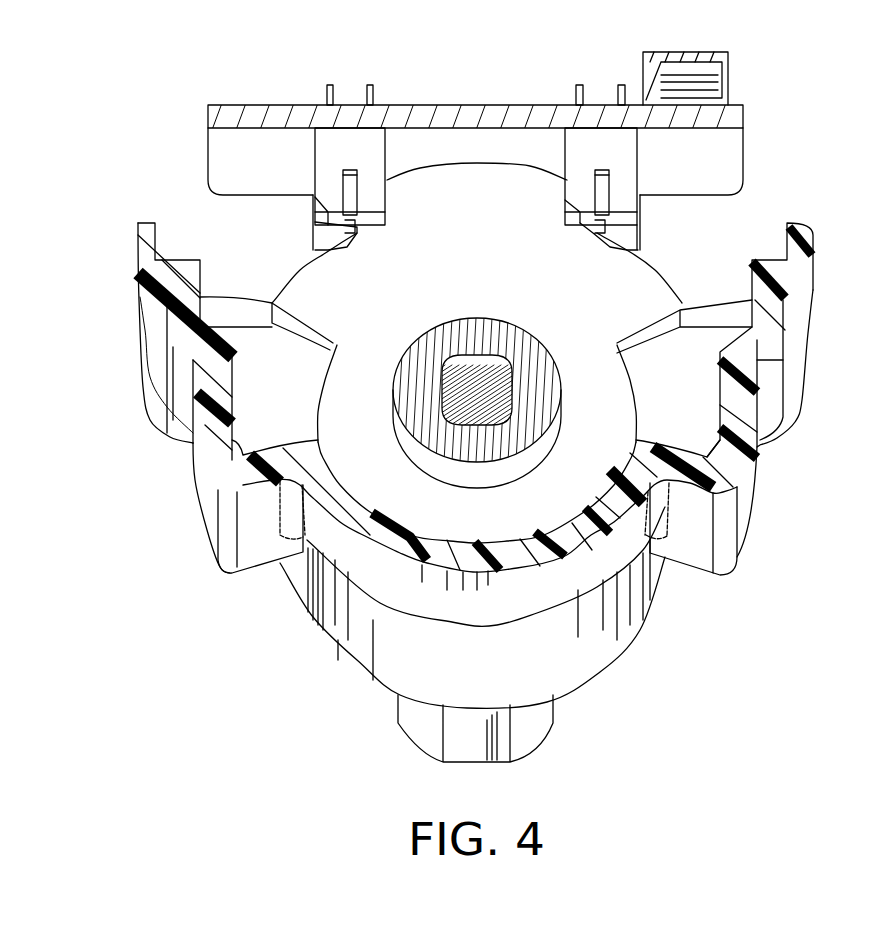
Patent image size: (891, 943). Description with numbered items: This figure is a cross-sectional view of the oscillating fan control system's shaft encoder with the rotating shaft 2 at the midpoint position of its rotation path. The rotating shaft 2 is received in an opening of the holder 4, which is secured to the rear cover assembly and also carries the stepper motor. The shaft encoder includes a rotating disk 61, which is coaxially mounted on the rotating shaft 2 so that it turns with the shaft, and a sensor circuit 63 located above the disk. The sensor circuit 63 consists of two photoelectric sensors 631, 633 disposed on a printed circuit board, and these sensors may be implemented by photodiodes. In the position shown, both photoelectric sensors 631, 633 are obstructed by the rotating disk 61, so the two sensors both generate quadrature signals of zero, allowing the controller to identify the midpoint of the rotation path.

The rotating shaft 2 is at (528, 352).
The holder 4 is at (727, 462).
The rotating disk 61 is at (318, 298).
The sensor circuit 63 is at (476, 112).
The photoelectric sensor 631 is at (350, 145).
The photoelectric sensor 633 is at (602, 145).